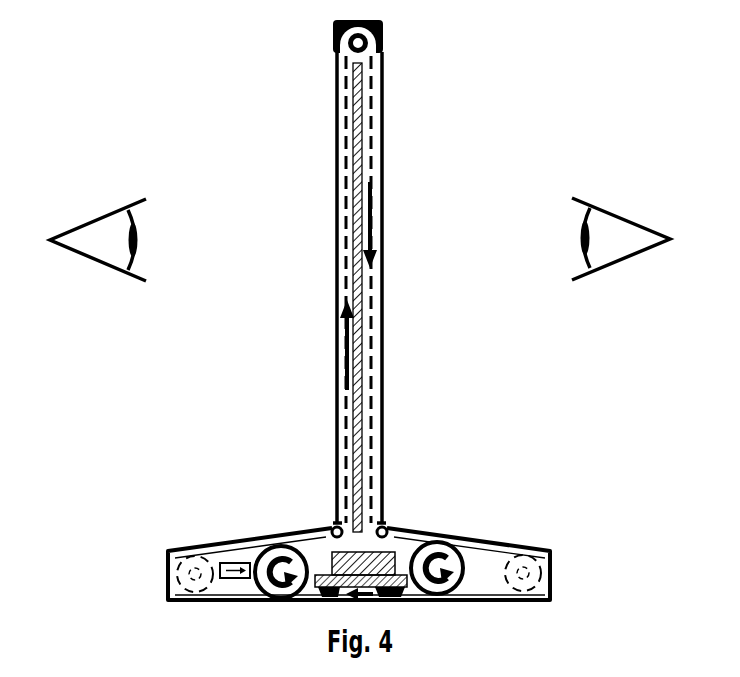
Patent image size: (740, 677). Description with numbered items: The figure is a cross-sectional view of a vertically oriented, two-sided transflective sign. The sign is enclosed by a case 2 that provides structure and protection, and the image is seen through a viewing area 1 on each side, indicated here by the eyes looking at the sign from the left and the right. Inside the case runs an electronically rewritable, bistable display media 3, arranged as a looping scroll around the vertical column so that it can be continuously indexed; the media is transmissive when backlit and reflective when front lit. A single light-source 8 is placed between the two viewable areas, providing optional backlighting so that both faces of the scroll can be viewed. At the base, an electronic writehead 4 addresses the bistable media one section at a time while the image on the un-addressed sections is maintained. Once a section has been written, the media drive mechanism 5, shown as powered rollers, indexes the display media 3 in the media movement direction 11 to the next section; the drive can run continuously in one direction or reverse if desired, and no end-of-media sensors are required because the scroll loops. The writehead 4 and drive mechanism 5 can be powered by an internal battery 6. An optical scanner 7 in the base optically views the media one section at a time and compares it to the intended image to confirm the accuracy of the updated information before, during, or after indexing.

The viewing area 1 is at (338, 311).
The case 2 is at (383, 26).
The display media 3 is at (372, 118).
The electronic writehead 4 is at (393, 560).
The media drive mechanism 5 is at (275, 550).
The battery 6 is at (538, 555).
The optical scanner 7 is at (235, 560).
The light-source 8 is at (355, 142).
The media movement direction 11 is at (373, 210).